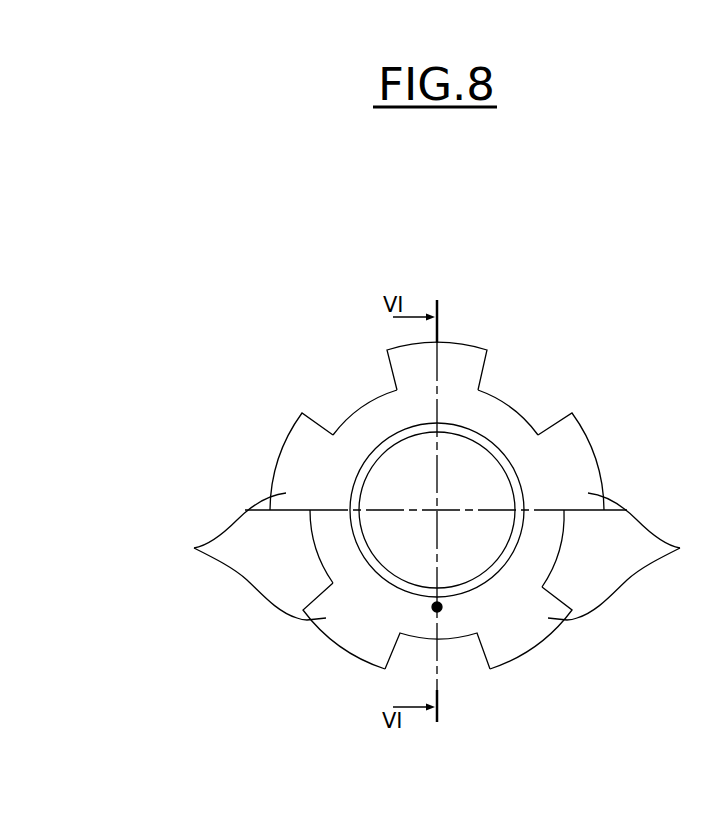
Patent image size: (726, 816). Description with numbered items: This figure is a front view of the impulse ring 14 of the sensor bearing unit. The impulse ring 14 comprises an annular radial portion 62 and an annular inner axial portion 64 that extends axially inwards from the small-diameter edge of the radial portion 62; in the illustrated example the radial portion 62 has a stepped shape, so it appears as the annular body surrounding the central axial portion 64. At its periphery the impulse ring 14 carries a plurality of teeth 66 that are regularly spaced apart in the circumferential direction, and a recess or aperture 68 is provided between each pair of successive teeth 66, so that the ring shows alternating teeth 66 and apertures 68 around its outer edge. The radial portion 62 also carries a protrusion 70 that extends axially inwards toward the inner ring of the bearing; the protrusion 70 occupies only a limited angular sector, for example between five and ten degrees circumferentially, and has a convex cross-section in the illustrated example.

The impulse ring 14 is at (604, 359).
The annular radial portion 62 is at (525, 553).
The annular inner axial portion 64 is at (403, 428).
The teeth 66 is at (475, 350).
The aperture 68 is at (365, 410).
The protrusion 70 is at (430, 608).